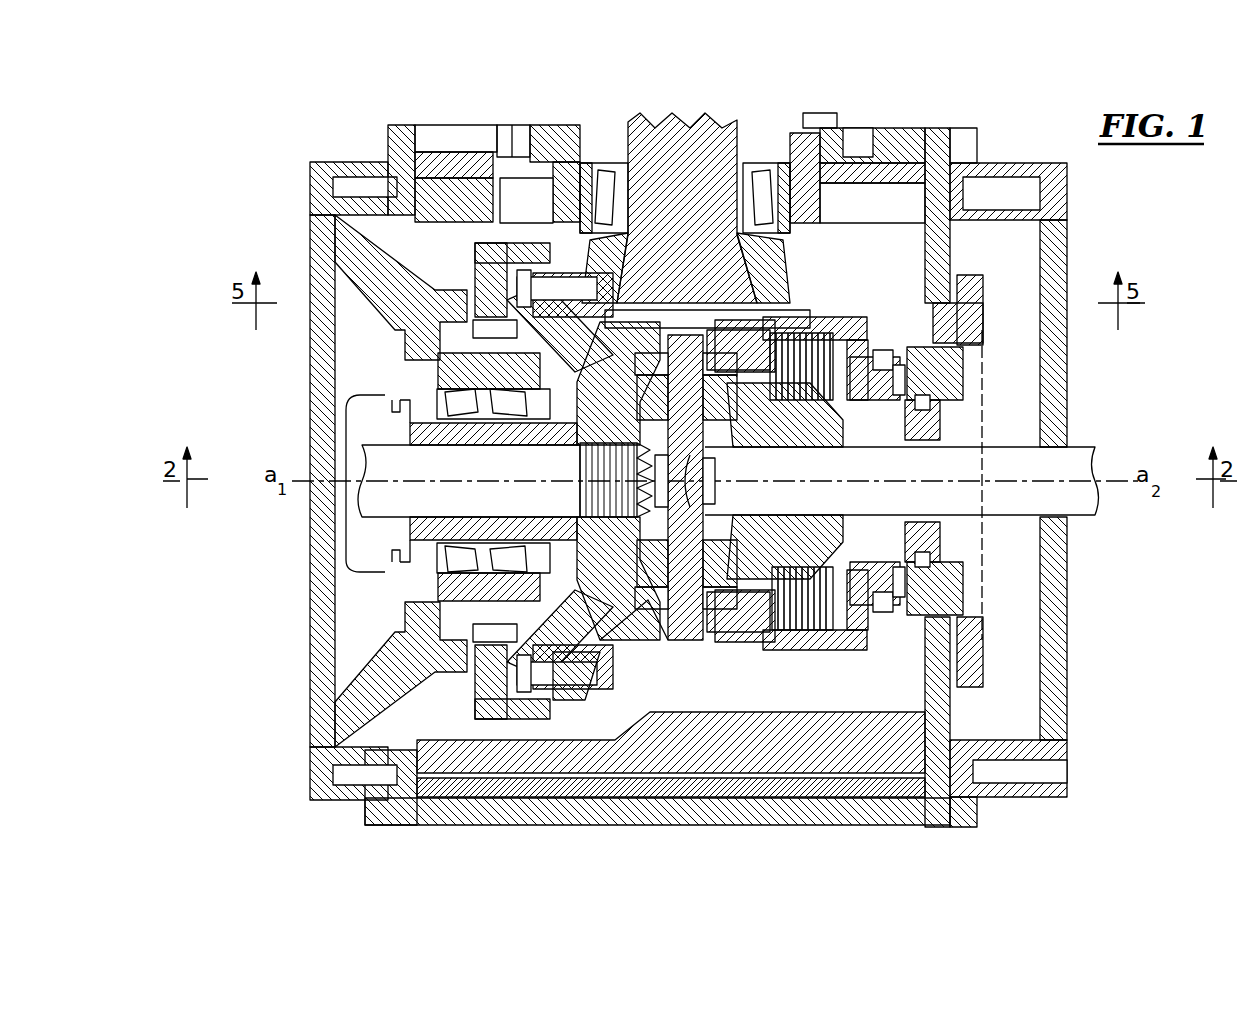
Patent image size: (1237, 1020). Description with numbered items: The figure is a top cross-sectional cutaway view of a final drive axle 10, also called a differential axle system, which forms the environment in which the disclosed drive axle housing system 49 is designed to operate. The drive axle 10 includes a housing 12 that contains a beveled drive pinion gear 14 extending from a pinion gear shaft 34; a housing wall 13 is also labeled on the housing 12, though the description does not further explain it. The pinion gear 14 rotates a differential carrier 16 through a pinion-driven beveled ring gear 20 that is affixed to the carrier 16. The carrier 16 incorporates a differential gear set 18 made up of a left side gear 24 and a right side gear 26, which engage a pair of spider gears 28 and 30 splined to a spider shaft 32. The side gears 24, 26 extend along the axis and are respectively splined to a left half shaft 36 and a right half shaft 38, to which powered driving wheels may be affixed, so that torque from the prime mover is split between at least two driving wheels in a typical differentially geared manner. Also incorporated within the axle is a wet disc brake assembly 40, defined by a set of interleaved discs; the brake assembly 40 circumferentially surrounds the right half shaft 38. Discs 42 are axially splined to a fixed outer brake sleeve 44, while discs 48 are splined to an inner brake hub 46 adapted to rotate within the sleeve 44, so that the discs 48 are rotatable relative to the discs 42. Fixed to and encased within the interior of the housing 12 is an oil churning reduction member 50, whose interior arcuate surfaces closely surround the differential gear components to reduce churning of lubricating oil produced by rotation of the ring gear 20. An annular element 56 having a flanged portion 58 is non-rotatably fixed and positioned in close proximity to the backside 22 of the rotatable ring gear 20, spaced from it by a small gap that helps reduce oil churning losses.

The final drive axle 10 is at (277, 137).
The housing 12 is at (1057, 660).
The housing wall 13 is at (1040, 618).
The beveled drive pinion gear 14 is at (772, 262).
The differential carrier 16 is at (740, 612).
The differential gear set 18 is at (655, 350).
The beveled ring gear 20 is at (552, 245).
The backside of ring gear 22 is at (548, 698).
The left side gear 24 is at (612, 522).
The right side gear 26 is at (800, 515).
The spider gear 28 is at (715, 440).
The spider gear 30 is at (665, 598).
The spider shaft 32 is at (698, 408).
The pinion gear shaft 34 is at (692, 128).
The left half shaft 36 is at (475, 474).
The right half shaft 38 is at (866, 474).
The wet disc brake assembly 40 is at (810, 650).
The brake discs 42 is at (775, 333).
The fixed outer brake sleeve 44 is at (900, 330).
The inner brake hub 46 is at (812, 410).
The brake discs 48 is at (805, 403).
The drive axle housing system 49 is at (472, 728).
The oil churning reduction member 50 is at (901, 293).
The annular element 56 is at (487, 270).
The flanged portion 58 is at (560, 700).